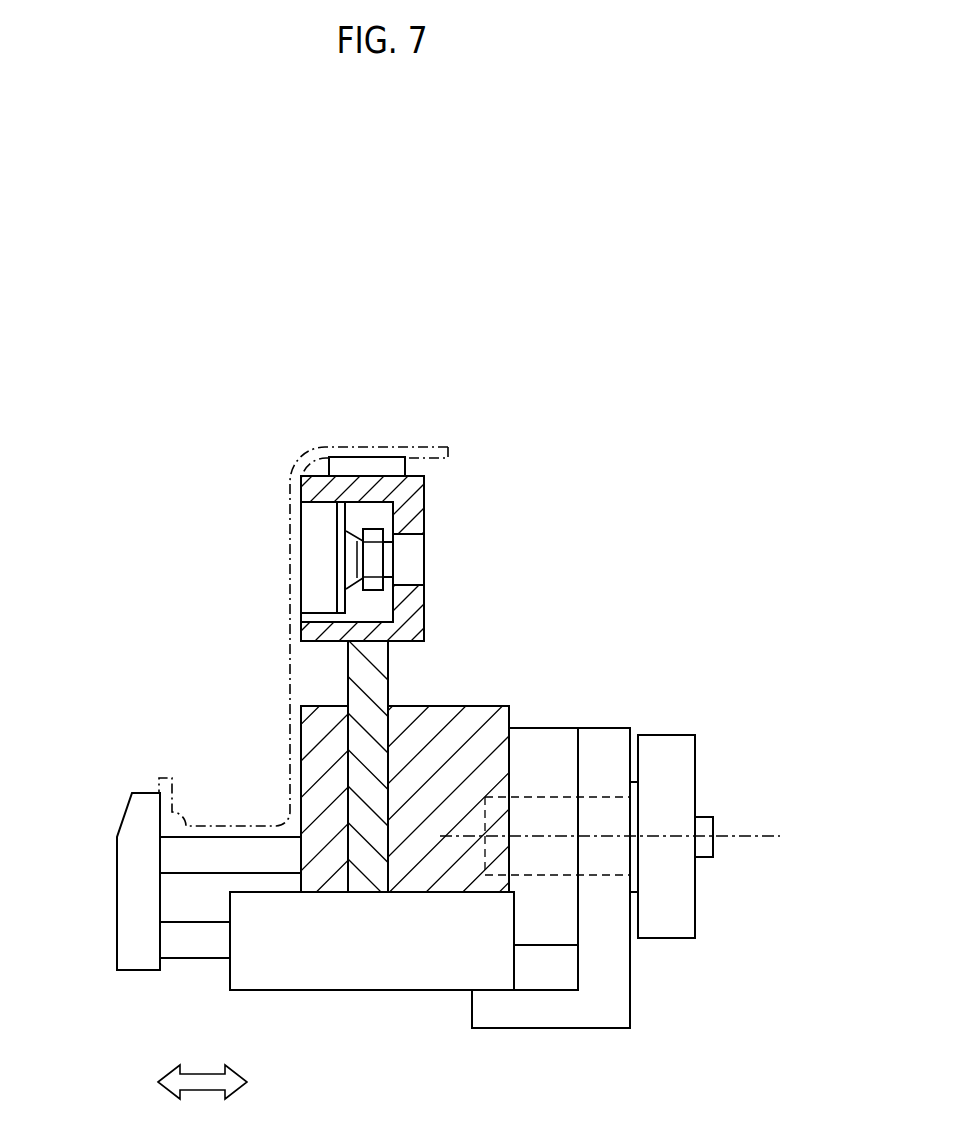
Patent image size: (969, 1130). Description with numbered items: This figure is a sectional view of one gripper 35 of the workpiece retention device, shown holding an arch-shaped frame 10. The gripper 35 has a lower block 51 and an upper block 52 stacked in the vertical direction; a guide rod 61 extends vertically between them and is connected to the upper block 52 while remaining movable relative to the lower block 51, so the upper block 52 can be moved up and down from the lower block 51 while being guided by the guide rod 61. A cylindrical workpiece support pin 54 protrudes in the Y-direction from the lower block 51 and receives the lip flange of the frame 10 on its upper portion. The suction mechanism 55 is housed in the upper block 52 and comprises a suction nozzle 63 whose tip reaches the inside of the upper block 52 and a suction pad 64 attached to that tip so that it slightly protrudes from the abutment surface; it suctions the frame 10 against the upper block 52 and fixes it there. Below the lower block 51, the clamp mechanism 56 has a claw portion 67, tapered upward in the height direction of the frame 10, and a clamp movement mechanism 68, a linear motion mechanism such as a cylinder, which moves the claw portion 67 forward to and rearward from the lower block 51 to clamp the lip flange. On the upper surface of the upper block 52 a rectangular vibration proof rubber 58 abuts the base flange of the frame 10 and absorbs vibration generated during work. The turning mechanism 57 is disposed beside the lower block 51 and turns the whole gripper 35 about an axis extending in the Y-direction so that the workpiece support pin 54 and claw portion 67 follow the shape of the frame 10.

The frame 10 is at (340, 443).
The gripper 35 is at (535, 548).
The lower block 51 is at (478, 706).
The upper block 52 is at (425, 498).
The workpiece support pin 54 is at (188, 852).
The suction mechanism 55 is at (282, 503).
The clamp mechanism 56 is at (345, 1008).
The turning mechanism 57 is at (663, 950).
The vibration proof rubber 58 is at (372, 467).
The guide rod 61 is at (388, 678).
The suction nozzle 63 is at (376, 593).
The suction pad 64 is at (312, 557).
The claw portion 67 is at (117, 883).
The clamp movement mechanism 68 is at (275, 993).